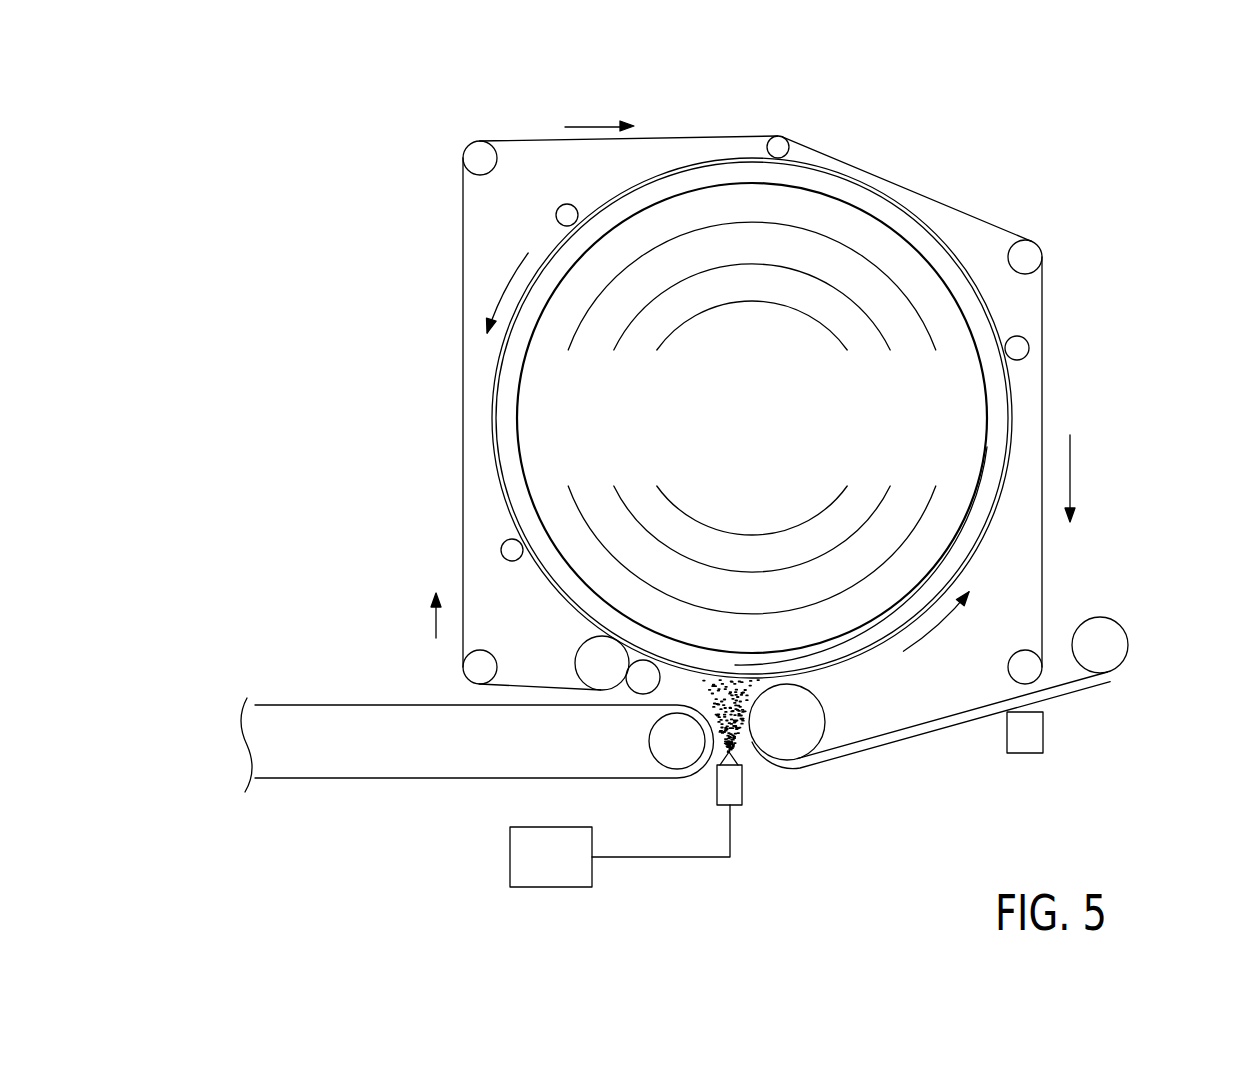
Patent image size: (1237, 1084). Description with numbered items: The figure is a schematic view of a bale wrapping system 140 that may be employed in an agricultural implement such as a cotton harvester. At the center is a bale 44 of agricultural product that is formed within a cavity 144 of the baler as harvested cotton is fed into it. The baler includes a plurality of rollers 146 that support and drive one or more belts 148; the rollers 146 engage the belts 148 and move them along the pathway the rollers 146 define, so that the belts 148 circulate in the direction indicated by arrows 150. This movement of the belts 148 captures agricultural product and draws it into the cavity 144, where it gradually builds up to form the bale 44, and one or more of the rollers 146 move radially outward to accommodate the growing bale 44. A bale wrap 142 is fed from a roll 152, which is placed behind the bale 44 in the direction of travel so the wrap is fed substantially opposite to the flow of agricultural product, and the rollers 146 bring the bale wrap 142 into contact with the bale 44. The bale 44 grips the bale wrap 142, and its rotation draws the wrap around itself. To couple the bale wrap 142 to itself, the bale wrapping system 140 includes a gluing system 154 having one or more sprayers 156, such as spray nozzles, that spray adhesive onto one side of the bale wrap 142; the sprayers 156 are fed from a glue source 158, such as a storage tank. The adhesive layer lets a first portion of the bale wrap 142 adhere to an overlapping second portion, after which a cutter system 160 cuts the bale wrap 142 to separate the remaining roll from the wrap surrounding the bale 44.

The bale wrapping system 140 is at (295, 145).
The bale 44 is at (736, 426).
The belts 148 is at (1042, 330).
The rollers 146 is at (480, 158).
The arrows 150 is at (594, 126).
The roll 152 is at (1100, 645).
The bale wrap 142 is at (1065, 688).
The cutter system 160 is at (1025, 755).
The cavity 144 is at (600, 730).
The sprayers 156 is at (715, 783).
The glue source 158 is at (510, 857).
The gluing system 154 is at (776, 805).